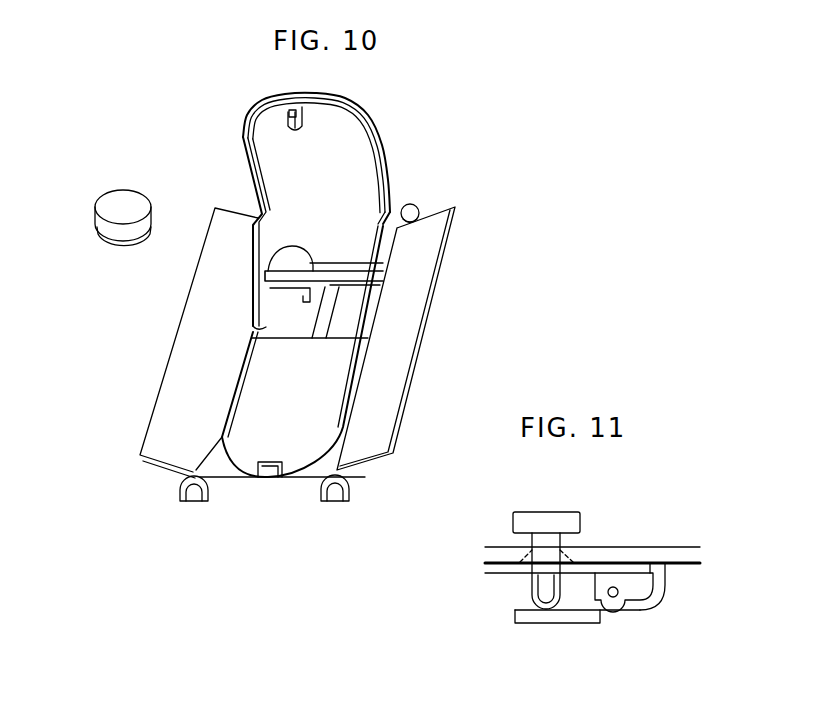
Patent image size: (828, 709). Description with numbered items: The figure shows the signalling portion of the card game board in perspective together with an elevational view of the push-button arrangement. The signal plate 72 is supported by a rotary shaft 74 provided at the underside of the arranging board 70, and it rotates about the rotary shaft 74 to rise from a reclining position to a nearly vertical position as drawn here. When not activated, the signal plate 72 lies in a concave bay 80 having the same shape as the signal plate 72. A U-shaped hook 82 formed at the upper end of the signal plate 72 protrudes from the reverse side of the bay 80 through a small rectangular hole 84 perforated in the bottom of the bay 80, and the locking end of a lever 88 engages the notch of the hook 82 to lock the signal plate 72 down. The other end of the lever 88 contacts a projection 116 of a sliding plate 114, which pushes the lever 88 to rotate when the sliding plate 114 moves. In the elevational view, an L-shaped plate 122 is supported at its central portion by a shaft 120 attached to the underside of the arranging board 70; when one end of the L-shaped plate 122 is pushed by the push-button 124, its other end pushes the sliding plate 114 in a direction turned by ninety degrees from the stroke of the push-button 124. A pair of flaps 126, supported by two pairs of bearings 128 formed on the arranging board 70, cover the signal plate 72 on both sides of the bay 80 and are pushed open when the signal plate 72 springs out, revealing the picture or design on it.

In FIG. 10, the signal plate 72 is at (381, 152).
In FIG. 10, the U-shaped hook 82 is at (307, 122).
In FIG. 10, the concave bay 80 is at (262, 402).
In FIG. 10, the rotary shaft 74 is at (275, 250).
In FIG. 10, the projection 116 is at (270, 293).
In FIG. 10, the lever 88 is at (325, 314).
In FIG. 10, the flaps 126 is at (190, 342).
In FIG. 10, the bearings 128 is at (420, 204).
In FIG. 10, the rectangular hole 84 is at (265, 478).
In FIG. 10, the push-button 124 is at (127, 207).
In FIG. 11, the push-button 124 is at (547, 510).
In FIG. 11, the arranging board 70 is at (632, 545).
In FIG. 11, the sliding plate 114 is at (500, 573).
In FIG. 11, the L-shaped plate 122 is at (565, 624).
In FIG. 11, the shaft 120 is at (613, 600).